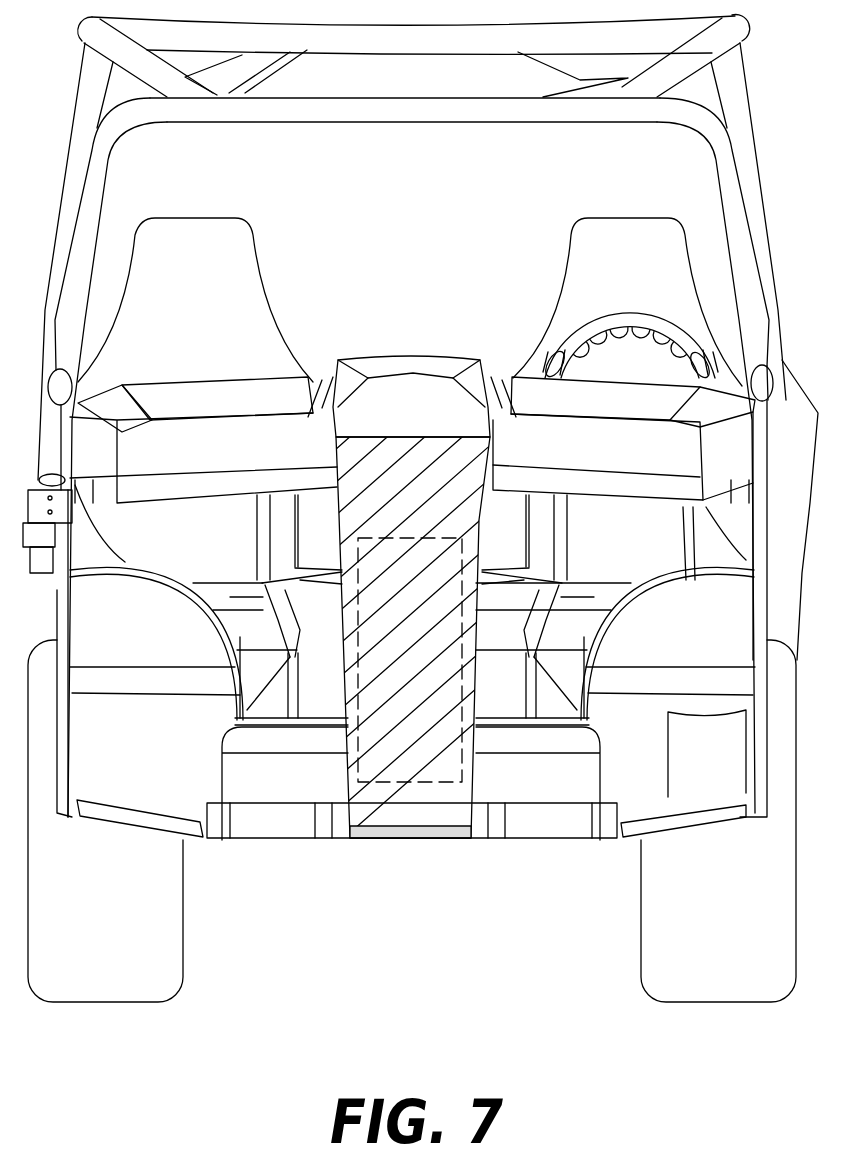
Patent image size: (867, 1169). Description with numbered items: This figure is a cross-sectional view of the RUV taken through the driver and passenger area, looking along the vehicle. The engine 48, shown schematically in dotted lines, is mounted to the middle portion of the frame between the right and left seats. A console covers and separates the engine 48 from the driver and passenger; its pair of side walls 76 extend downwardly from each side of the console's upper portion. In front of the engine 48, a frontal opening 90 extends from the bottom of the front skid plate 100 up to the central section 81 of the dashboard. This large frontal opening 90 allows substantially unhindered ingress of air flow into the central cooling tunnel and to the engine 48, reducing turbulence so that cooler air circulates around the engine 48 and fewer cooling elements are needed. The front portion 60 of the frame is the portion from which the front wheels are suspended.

The engine 48 is at (413, 657).
The front portion 60 is at (367, 838).
The side walls 76 is at (338, 537).
The central section 81 is at (397, 360).
The frontal opening 90 is at (433, 577).
The skid plate 100 is at (388, 838).